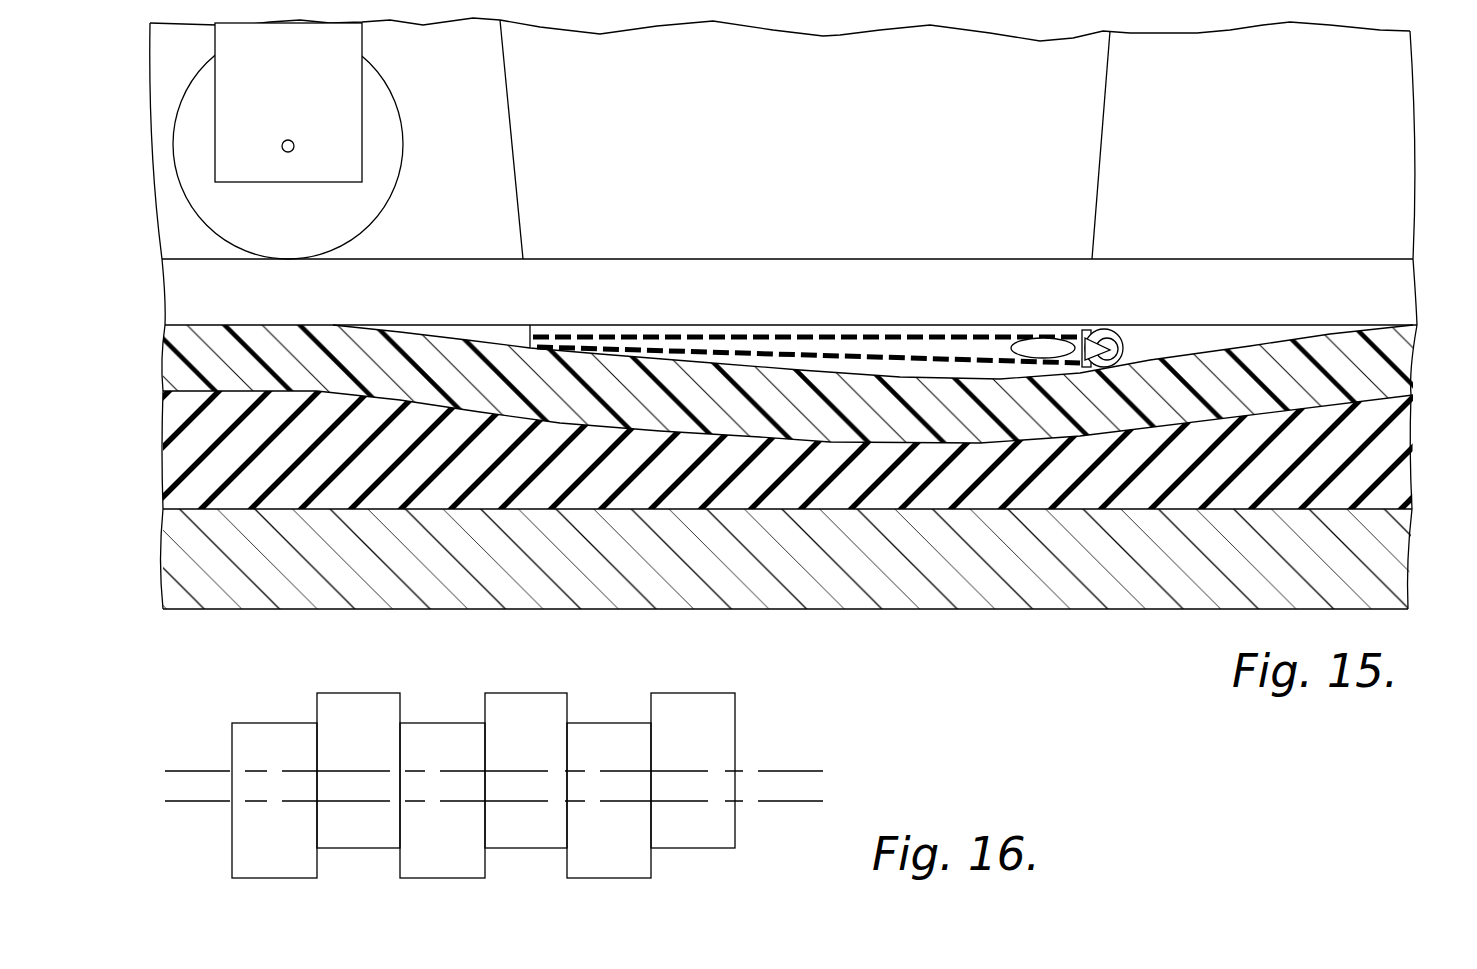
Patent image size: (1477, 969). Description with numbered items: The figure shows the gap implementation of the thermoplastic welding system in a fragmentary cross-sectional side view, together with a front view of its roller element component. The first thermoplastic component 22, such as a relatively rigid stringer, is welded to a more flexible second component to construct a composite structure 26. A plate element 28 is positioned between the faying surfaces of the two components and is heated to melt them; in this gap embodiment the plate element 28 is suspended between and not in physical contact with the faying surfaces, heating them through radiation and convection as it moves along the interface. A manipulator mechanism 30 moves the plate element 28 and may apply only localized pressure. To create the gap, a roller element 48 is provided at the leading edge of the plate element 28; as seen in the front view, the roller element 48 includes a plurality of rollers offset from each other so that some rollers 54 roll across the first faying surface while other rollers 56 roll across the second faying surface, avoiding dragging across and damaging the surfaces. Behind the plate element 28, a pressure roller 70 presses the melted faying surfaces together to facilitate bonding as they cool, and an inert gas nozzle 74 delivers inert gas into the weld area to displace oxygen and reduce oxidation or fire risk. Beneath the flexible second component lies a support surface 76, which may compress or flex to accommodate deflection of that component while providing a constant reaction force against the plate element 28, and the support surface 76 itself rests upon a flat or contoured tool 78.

In FIG. 15, the first thermoplastic component 22 is at (1385, 143).
In FIG. 15, the composite structure 26 is at (1397, 360).
In FIG. 15, the plate element 28 is at (982, 350).
In FIG. 15, the manipulator mechanism 30 is at (1114, 132).
In FIG. 15, the roller element 48 is at (1137, 336).
In FIG. 16, the roller element 48 is at (459, 804).
In FIG. 16, the rollers 54 is at (218, 860).
In FIG. 16, the rollers 56 is at (352, 862).
In FIG. 15, the pressure roller 70 is at (385, 142).
In FIG. 15, the inert gas nozzle 74 is at (1047, 353).
In FIG. 15, the support surface 76 is at (1403, 432).
In FIG. 15, the tool 78 is at (1405, 552).